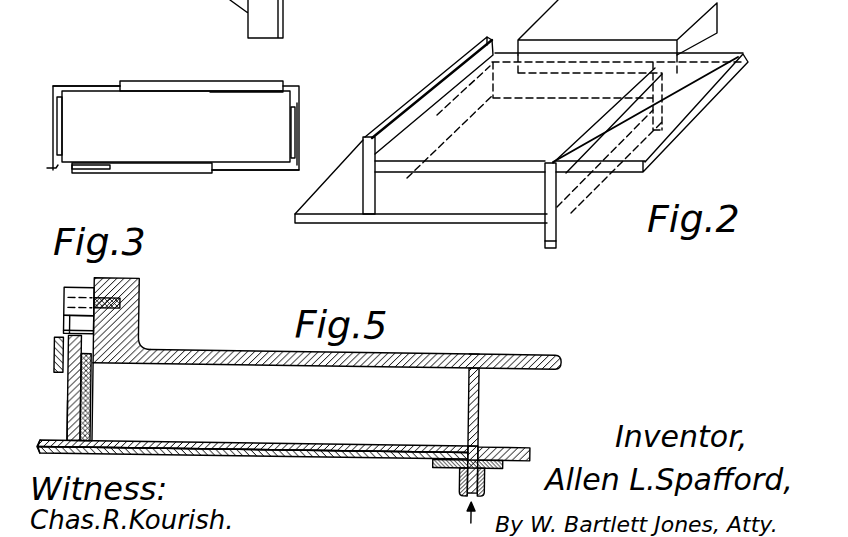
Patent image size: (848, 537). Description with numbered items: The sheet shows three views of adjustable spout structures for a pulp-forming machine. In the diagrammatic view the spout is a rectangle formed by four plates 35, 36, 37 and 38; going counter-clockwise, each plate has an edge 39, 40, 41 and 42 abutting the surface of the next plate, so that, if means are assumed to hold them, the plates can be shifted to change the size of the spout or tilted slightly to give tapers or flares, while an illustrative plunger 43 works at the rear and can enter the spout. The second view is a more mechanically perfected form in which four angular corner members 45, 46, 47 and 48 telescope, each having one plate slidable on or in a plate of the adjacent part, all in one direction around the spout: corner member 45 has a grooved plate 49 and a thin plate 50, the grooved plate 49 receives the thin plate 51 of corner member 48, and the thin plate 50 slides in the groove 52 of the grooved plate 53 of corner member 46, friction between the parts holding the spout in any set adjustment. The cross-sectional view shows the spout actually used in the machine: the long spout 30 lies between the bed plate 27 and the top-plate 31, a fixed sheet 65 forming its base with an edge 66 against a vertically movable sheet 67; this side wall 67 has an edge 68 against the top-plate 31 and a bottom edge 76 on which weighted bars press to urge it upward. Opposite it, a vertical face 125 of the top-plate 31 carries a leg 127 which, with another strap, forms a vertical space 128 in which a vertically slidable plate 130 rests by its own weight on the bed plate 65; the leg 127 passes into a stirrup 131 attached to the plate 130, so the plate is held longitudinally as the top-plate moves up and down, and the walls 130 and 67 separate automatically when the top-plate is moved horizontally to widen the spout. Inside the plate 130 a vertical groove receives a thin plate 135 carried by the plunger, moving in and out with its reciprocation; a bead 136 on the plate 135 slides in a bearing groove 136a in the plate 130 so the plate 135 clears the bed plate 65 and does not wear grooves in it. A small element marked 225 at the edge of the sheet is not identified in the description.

In FIG. 3, the angular corner member 45 is at (337, 162).
In FIG. 3, the angular corner member 47 is at (110, 67).
In FIG. 3, the angular corner member 48 is at (338, 74).
In FIG. 3, the grooved plate 49 is at (300, 110).
In FIG. 3, the thin plate 51 is at (338, 135).
In FIG. 3, the angular corner member 46 is at (48, 168).
In FIG. 3, the groove 52 is at (93, 170).
In FIG. 3, the grooved plate 53 is at (128, 168).
In FIG. 3, the thin plate 50 is at (237, 165).
In FIG. 2, the fragment of adjacent figure 225 is at (277, 7).
In FIG. 2, the plate 35 is at (453, 218).
In FIG. 2, the plate 36 is at (365, 190).
In FIG. 2, the edge 40 is at (375, 207).
In FIG. 2, the edge 41 is at (380, 165).
In FIG. 2, the plate 37 is at (467, 163).
In FIG. 2, the plate 38 is at (547, 192).
In FIG. 2, the edge 39 is at (537, 227).
In FIG. 2, the edge 42 is at (545, 175).
In FIG. 2, the plunger 43 is at (677, 21).
In FIG. 5, the vertically slidable plate 130 is at (93, 344).
In FIG. 5, the top-plate 31 is at (378, 362).
In FIG. 5, the vertical face of the top-plate 125 is at (62, 322).
In FIG. 5, the vertical space 128 is at (80, 330).
In FIG. 5, the stirrup 131 is at (55, 372).
In FIG. 5, the leg 127 is at (67, 382).
In FIG. 5, the bead 136 is at (85, 415).
In FIG. 5, the bearing groove 136a is at (93, 417).
In FIG. 5, the thin plate 135 is at (92, 397).
In FIG. 5, the bed plate sheet 65 is at (345, 442).
In FIG. 5, the bed plate 27 is at (382, 447).
In FIG. 5, the vertically movable sheet 67 is at (480, 387).
In FIG. 5, the edge 66 is at (467, 439).
In FIG. 5, the edge 68 is at (473, 347).
In FIG. 5, the bottom edge 76 is at (472, 478).
In FIG. 5, the spout 30 is at (281, 410).